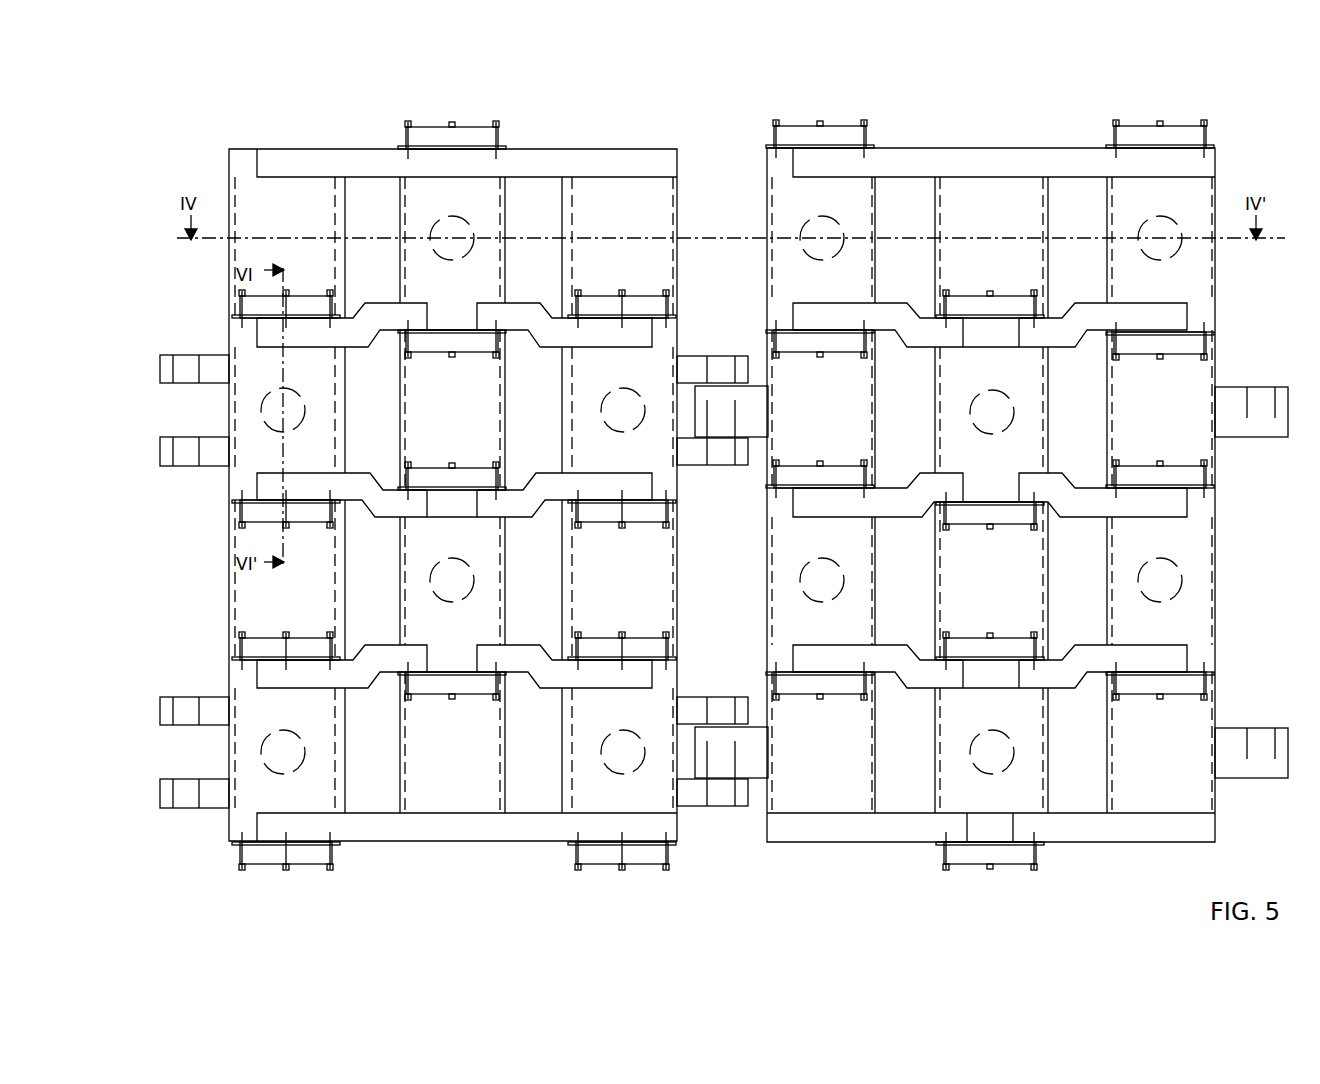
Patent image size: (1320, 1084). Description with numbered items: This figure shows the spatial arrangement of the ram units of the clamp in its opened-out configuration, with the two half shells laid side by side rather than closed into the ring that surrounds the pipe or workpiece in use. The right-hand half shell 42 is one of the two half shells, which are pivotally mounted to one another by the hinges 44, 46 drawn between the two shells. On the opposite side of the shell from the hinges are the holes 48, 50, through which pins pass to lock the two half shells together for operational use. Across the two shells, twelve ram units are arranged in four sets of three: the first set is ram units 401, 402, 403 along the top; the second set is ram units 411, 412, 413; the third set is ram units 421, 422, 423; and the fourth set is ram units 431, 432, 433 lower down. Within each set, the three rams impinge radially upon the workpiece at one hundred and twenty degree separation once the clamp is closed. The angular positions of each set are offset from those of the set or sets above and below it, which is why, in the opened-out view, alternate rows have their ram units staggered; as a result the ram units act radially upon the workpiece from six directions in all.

The half shell 42 is at (836, 869).
The hinge 44 is at (734, 355).
The hinge 46 is at (734, 696).
The hole 48 is at (194, 436).
The hole 50 is at (194, 696).
The ram unit 401 is at (447, 125).
The ram unit 402 is at (836, 125).
The ram unit 403 is at (1184, 125).
The ram unit 411 is at (324, 293).
The ram unit 412 is at (590, 293).
The ram unit 413 is at (1002, 293).
The ram unit 421 is at (456, 462).
The ram unit 422 is at (832, 462).
The ram unit 423 is at (1124, 462).
The ram unit 431 is at (262, 632).
The ram unit 432 is at (594, 632).
The ram unit 433 is at (968, 632).